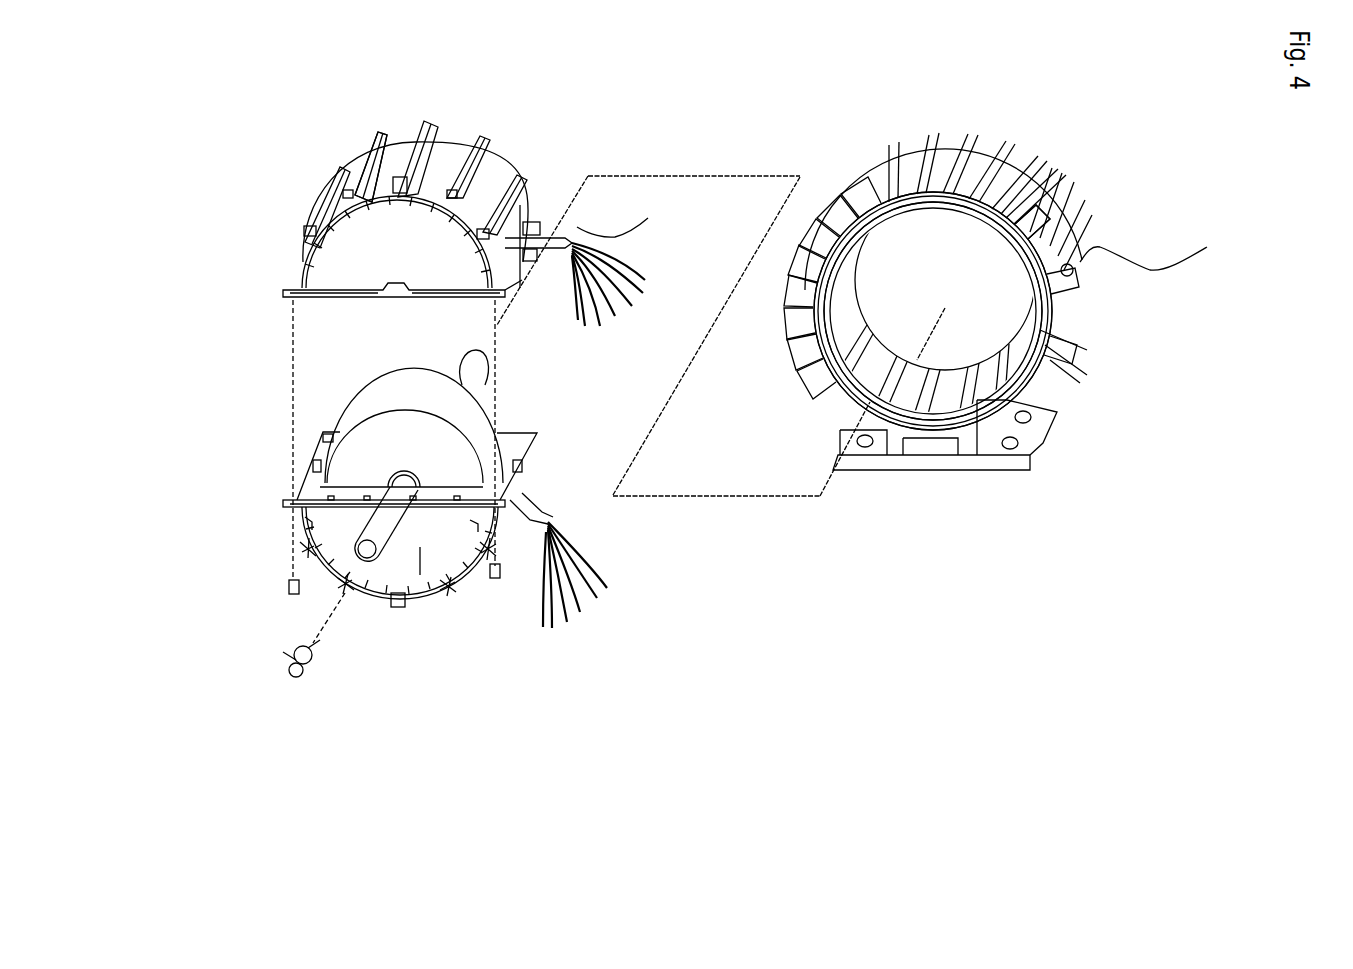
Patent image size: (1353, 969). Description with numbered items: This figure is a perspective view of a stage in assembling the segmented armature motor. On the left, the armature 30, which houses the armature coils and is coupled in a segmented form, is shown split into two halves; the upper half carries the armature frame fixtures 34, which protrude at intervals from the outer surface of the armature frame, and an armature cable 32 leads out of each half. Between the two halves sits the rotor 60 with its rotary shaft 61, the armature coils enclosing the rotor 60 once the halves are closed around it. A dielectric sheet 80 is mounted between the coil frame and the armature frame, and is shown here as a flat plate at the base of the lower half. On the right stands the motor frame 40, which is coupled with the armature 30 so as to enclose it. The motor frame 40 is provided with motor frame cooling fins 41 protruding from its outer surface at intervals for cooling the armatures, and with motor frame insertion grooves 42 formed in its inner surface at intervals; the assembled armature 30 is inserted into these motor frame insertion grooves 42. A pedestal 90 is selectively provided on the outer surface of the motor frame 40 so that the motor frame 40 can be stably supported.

The armature 30 is at (462, 138).
The armature cable 32 is at (550, 530).
The armature frame fixture 34 is at (380, 172).
The motor frame 40 is at (975, 170).
The motor frame cooling fin 41 is at (1078, 225).
The motor frame insertion groove 42 is at (985, 205).
The rotor 60 is at (393, 400).
The rotary shaft 61 is at (380, 593).
The dielectric sheet 80 is at (291, 500).
The pedestal 90 is at (1046, 446).